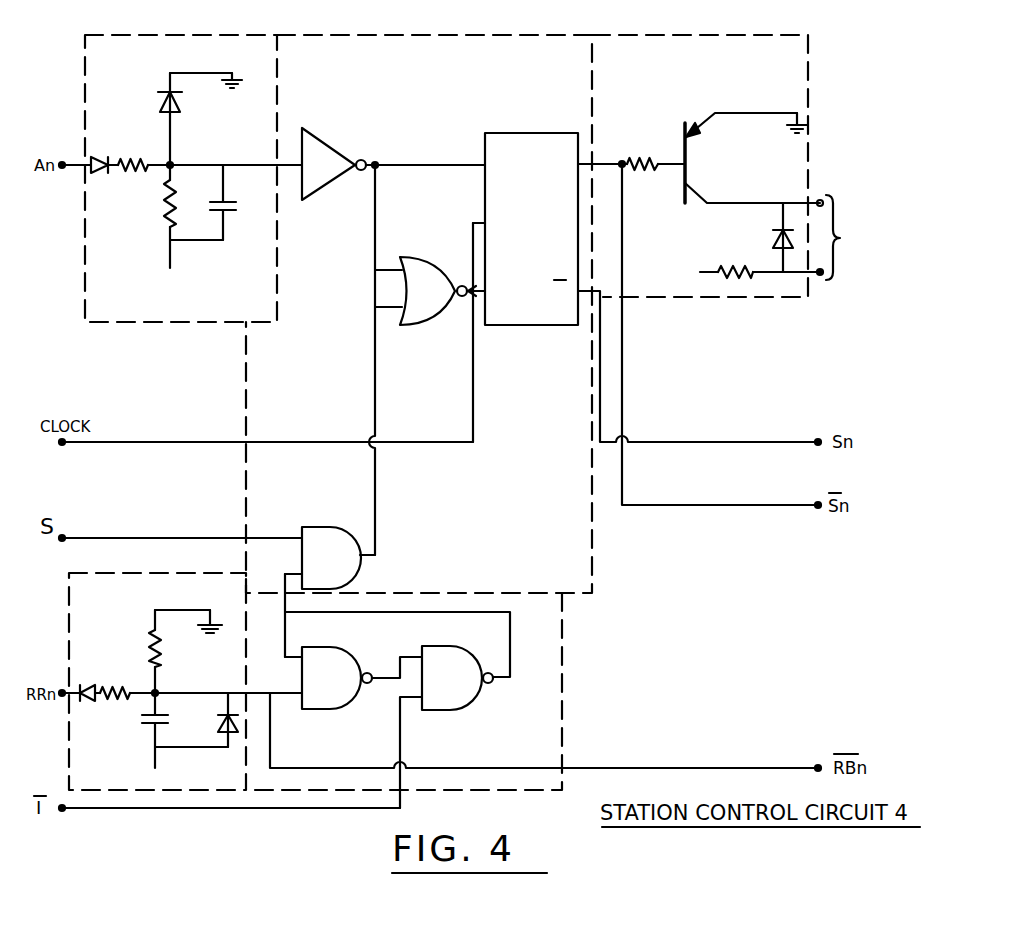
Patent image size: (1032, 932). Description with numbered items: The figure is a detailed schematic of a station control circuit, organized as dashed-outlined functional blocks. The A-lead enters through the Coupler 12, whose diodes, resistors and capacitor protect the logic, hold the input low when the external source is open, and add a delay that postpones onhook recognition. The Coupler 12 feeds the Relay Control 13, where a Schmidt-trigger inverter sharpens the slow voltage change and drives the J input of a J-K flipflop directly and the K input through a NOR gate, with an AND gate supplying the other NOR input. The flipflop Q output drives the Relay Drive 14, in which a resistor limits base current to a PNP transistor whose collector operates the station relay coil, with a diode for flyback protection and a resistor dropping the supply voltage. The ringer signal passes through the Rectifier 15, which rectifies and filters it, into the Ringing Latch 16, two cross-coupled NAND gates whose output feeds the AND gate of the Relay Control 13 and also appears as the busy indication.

The Coupler 12 is at (236, 42).
The Relay Control 13 is at (410, 43).
The Relay Drive 14 is at (668, 43).
The Rectifier 15 is at (128, 576).
The Ringing Latch 16 is at (562, 681).